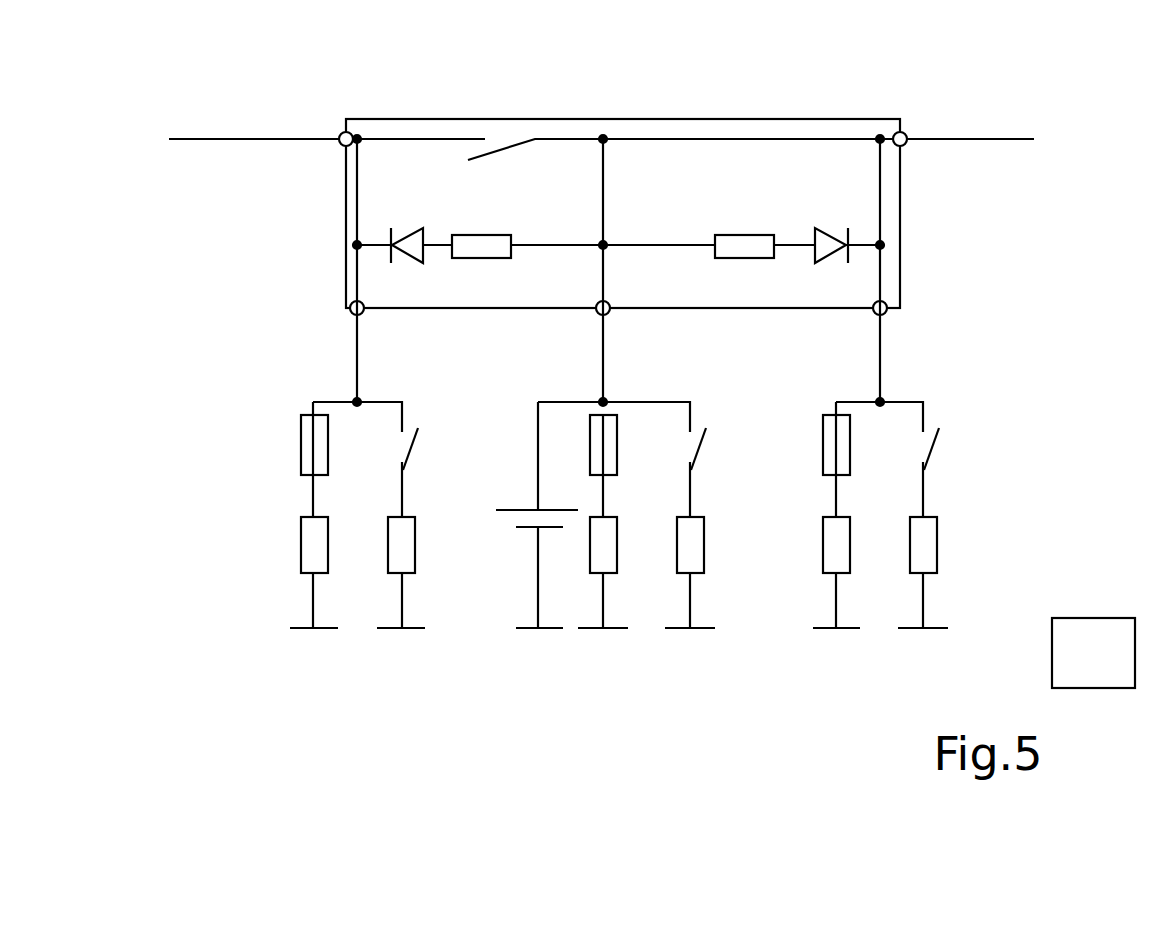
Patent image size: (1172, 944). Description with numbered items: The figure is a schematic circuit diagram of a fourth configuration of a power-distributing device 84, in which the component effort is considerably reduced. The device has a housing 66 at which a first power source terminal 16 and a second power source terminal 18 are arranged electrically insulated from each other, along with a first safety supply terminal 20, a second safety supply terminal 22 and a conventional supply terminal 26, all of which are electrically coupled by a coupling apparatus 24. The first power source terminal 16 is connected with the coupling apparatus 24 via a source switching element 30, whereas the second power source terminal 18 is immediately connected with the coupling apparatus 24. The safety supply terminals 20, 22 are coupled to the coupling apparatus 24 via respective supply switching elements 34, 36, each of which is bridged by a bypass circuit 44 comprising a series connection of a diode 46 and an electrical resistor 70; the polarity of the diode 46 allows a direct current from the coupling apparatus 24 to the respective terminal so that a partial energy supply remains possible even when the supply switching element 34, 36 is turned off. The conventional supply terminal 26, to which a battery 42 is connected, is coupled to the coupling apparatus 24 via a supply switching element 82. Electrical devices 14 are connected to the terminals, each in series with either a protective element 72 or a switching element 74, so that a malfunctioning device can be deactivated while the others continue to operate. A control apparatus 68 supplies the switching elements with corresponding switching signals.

The electrical device 14 is at (301, 545).
The first power source terminal 16 is at (340, 132).
The second power source terminal 18 is at (906, 132).
The first safety supply terminal 20 is at (350, 315).
The second safety supply terminal 22 is at (888, 313).
The coupling apparatus 24 is at (457, 172).
The conventional supply terminal 26 is at (597, 314).
The source switching element 30 is at (498, 150).
The supply switching element 34 is at (397, 207).
The supply switching element 36 is at (832, 207).
The battery 42 is at (517, 530).
The bypass circuit 44 is at (378, 267).
The diode 46 is at (390, 232).
The housing 66 is at (800, 119).
The control apparatus 68 is at (1095, 618).
The electrical resistor 70 is at (490, 260).
The protective element 72 is at (301, 445).
The switching element 74 is at (412, 445).
The supply switching element 82 is at (603, 190).
The power-distributing device 84 is at (860, 110).